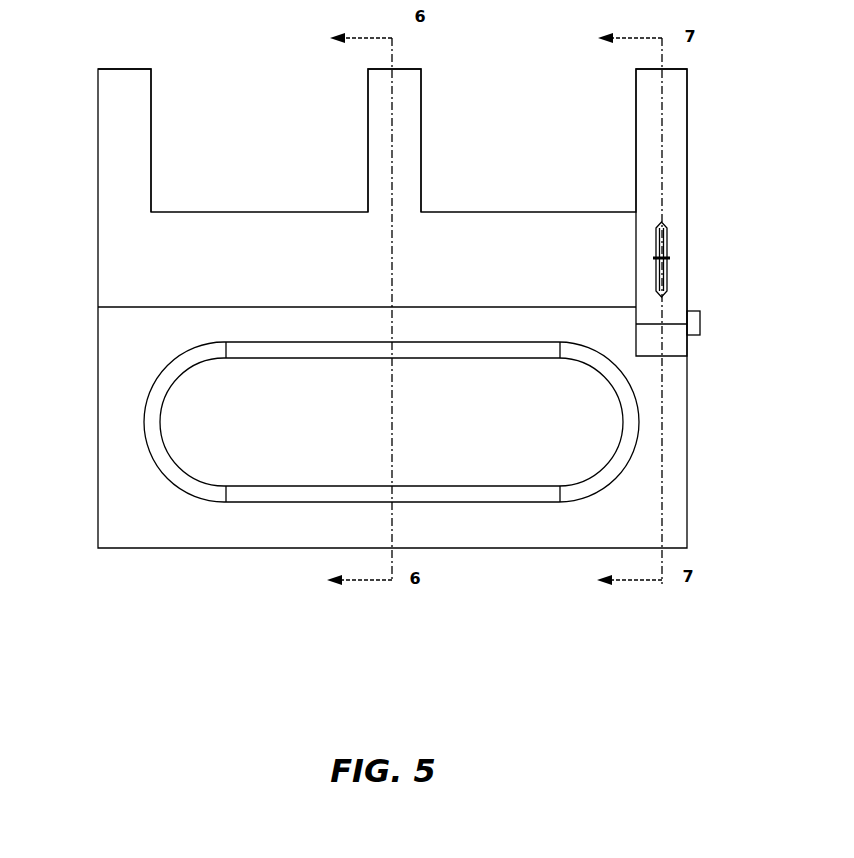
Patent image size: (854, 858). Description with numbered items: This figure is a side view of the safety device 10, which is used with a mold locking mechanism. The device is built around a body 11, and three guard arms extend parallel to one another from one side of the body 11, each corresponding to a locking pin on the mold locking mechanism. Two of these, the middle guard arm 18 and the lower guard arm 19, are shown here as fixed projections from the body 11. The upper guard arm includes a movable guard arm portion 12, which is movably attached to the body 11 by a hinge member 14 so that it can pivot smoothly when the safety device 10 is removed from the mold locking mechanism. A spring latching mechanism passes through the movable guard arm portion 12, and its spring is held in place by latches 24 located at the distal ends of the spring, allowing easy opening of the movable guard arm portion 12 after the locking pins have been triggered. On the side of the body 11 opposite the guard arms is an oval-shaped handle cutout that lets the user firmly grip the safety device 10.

The safety device 10 is at (487, 586).
The body 11 is at (108, 325).
The movable guard arm portion 12 is at (683, 137).
The hinge member 14 is at (700, 323).
The middle guard arm 18 is at (404, 163).
The lower guard arm 19 is at (133, 73).
The latches 24 is at (668, 249).